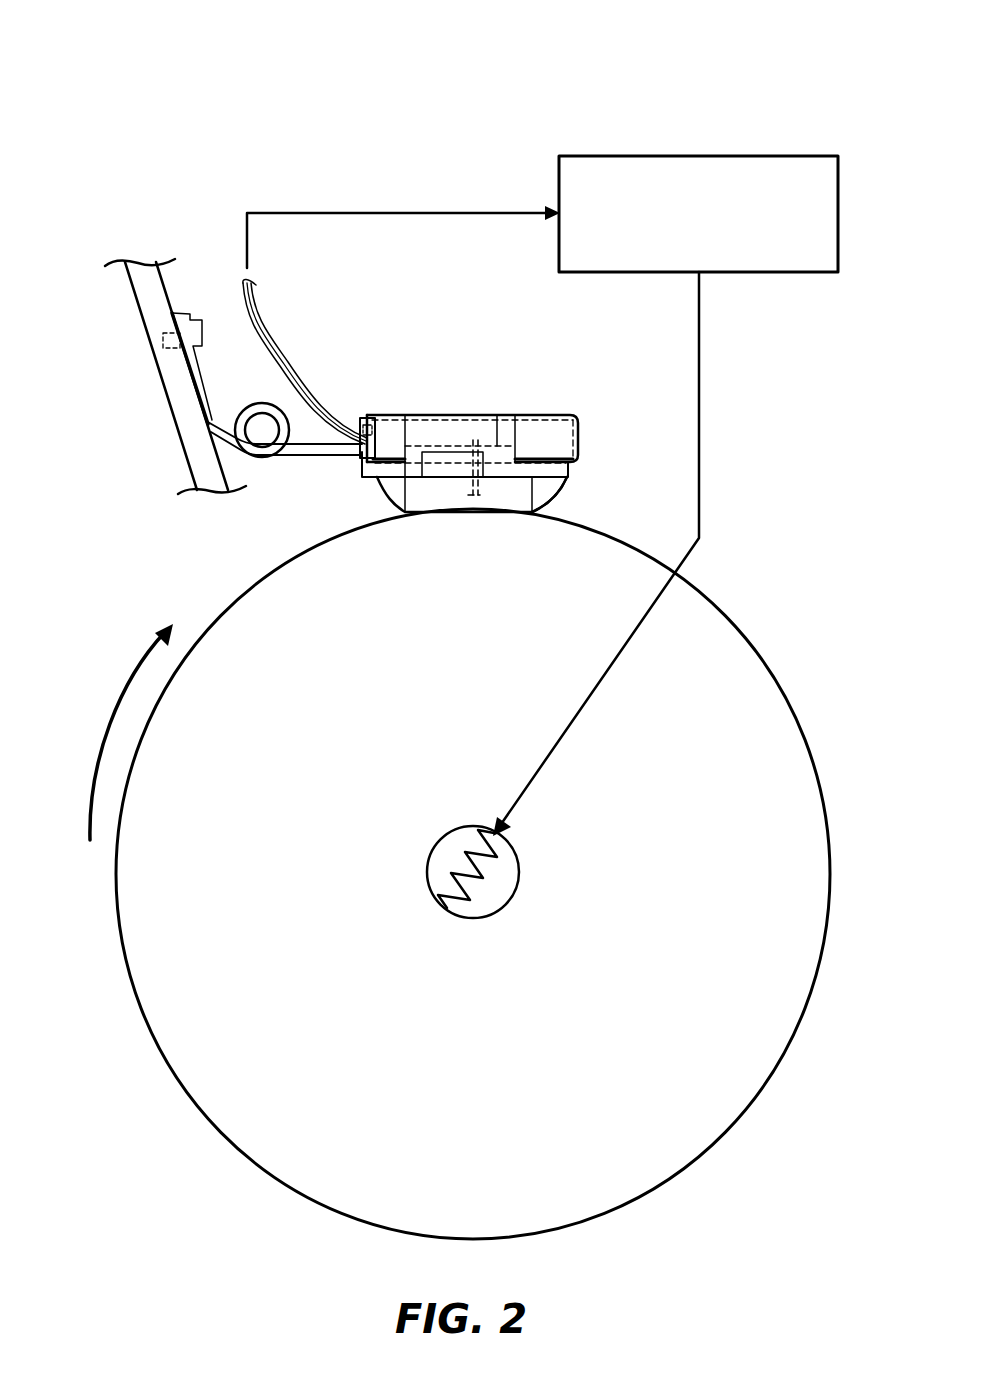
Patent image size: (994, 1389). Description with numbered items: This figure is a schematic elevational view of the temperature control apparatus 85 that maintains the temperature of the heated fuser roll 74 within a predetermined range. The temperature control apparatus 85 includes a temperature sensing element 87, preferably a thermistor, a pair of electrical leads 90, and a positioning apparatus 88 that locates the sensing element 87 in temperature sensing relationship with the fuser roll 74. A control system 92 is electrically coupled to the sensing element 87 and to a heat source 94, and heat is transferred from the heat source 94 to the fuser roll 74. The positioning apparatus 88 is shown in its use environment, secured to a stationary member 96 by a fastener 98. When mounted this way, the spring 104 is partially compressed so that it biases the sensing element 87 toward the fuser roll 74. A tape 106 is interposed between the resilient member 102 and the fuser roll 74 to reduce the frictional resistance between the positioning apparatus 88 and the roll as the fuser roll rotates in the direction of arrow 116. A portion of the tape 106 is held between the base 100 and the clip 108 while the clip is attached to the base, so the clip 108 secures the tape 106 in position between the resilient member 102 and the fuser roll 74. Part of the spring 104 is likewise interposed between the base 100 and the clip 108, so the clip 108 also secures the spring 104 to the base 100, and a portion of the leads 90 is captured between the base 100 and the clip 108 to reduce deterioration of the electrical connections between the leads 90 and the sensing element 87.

The fuser roll 74 is at (180, 1076).
The temperature control apparatus 85 is at (470, 108).
The temperature sensing element 87 is at (470, 497).
The positioning apparatus 88 is at (471, 462).
The electrical leads 90 is at (298, 352).
The control system 92 is at (699, 155).
The heat source 94 is at (472, 919).
The stationary member 96 is at (162, 390).
The fastener 98 is at (193, 320).
The base 100 is at (363, 464).
The resilient member 102 is at (425, 493).
The spring 104 is at (290, 458).
The tape 106 is at (560, 498).
The clip 108 is at (544, 426).
The arrow 116 is at (123, 708).